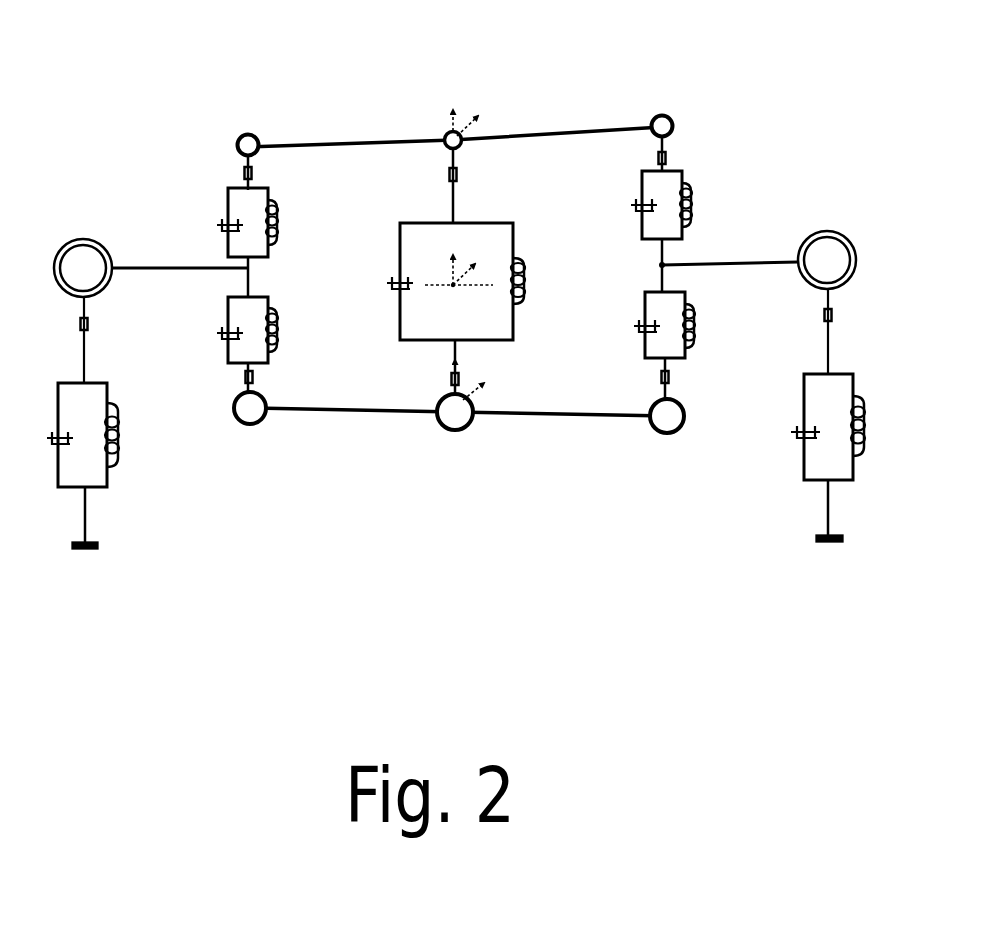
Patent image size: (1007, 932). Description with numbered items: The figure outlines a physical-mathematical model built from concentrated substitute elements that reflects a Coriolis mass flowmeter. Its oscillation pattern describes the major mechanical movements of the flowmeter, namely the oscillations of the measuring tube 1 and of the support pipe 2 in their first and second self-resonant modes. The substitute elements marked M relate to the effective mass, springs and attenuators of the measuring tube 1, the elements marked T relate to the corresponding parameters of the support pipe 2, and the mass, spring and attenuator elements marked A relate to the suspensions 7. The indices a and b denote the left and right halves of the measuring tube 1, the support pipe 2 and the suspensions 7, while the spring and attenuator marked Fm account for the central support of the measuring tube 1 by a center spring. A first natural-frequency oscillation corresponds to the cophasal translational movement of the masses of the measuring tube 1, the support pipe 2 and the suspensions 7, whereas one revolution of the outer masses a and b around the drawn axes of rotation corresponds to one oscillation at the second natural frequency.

The measuring tube 1 is at (553, 103).
The support pipe 2 is at (340, 428).
The suspensions 7 is at (130, 240).